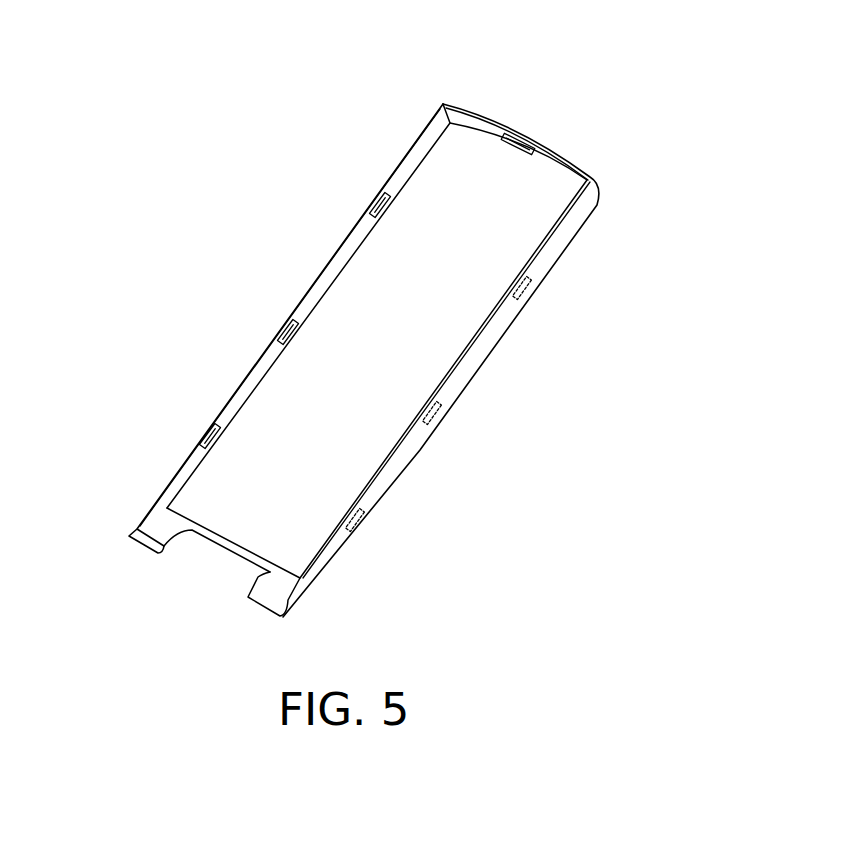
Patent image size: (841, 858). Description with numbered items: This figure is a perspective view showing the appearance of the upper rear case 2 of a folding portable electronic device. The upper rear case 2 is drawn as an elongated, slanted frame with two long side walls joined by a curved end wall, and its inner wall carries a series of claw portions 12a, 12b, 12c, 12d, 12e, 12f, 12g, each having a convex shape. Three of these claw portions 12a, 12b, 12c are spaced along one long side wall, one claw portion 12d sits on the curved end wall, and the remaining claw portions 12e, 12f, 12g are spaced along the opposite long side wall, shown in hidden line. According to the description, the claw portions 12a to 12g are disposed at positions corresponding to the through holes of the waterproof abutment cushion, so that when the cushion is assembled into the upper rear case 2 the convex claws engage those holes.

The upper rear case 2 is at (503, 122).
The claw portion 12a is at (204, 436).
The claw portion 12b is at (281, 323).
The claw portion 12c is at (380, 198).
The claw portion 12d is at (534, 141).
The claw portion 12e is at (529, 284).
The claw portion 12f is at (440, 403).
The claw portion 12g is at (360, 518).